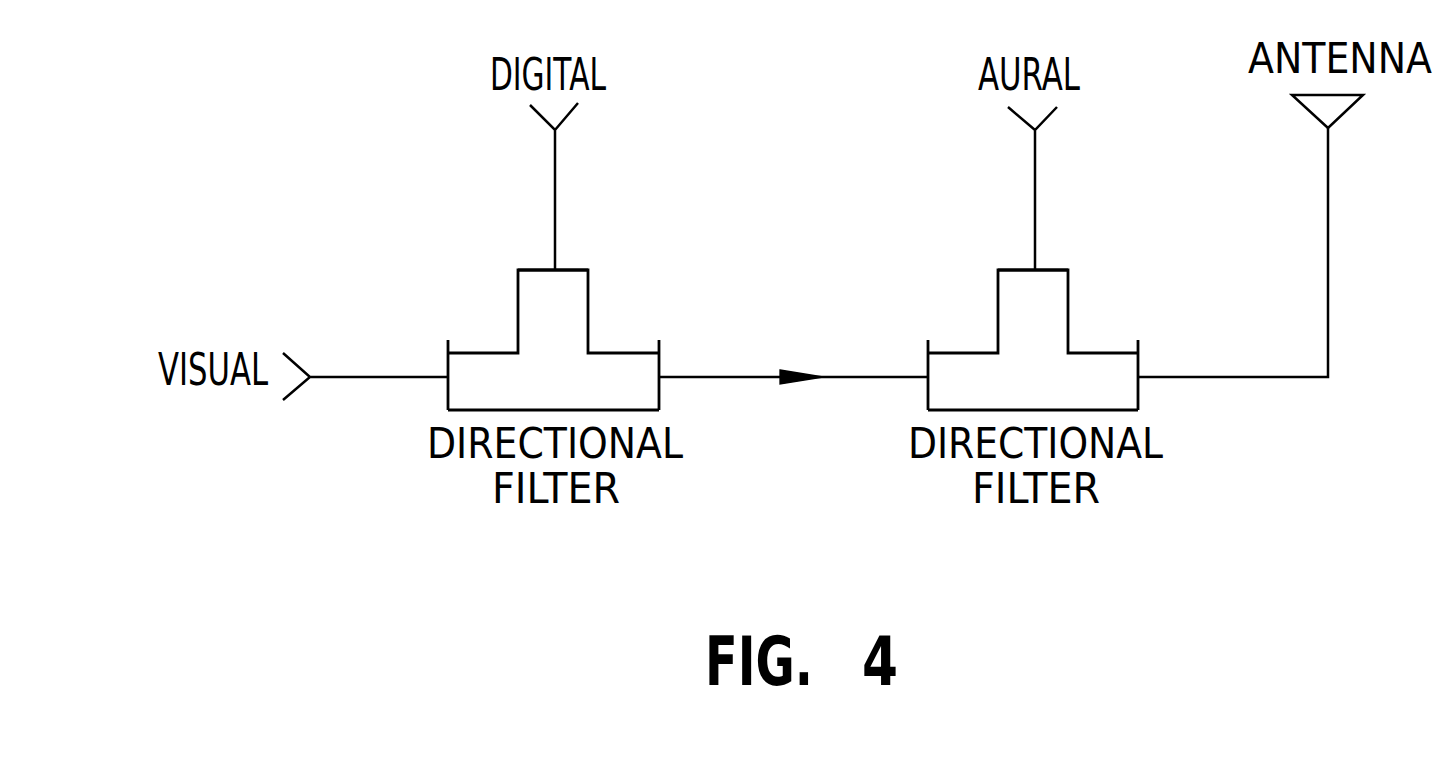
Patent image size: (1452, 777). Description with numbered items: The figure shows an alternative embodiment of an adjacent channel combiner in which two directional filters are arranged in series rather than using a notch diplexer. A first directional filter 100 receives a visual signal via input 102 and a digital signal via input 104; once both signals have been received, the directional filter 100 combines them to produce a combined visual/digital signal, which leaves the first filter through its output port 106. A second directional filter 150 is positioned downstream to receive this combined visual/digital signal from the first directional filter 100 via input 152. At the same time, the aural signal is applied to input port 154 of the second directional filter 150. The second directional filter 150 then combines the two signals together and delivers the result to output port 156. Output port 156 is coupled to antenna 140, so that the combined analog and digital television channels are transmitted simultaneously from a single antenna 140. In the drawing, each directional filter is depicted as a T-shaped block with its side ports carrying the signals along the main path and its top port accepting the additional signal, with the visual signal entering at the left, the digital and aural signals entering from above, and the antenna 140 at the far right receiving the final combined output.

The directional filter 100 is at (576, 268).
The input 102 is at (447, 373).
The input 104 is at (553, 268).
The output port of first directional filter 106 is at (660, 373).
The second directional filter 150 is at (1056, 268).
The input 152 is at (927, 373).
The input port 154 is at (1033, 268).
The output port 156 is at (1140, 373).
The antenna 140 is at (1345, 115).